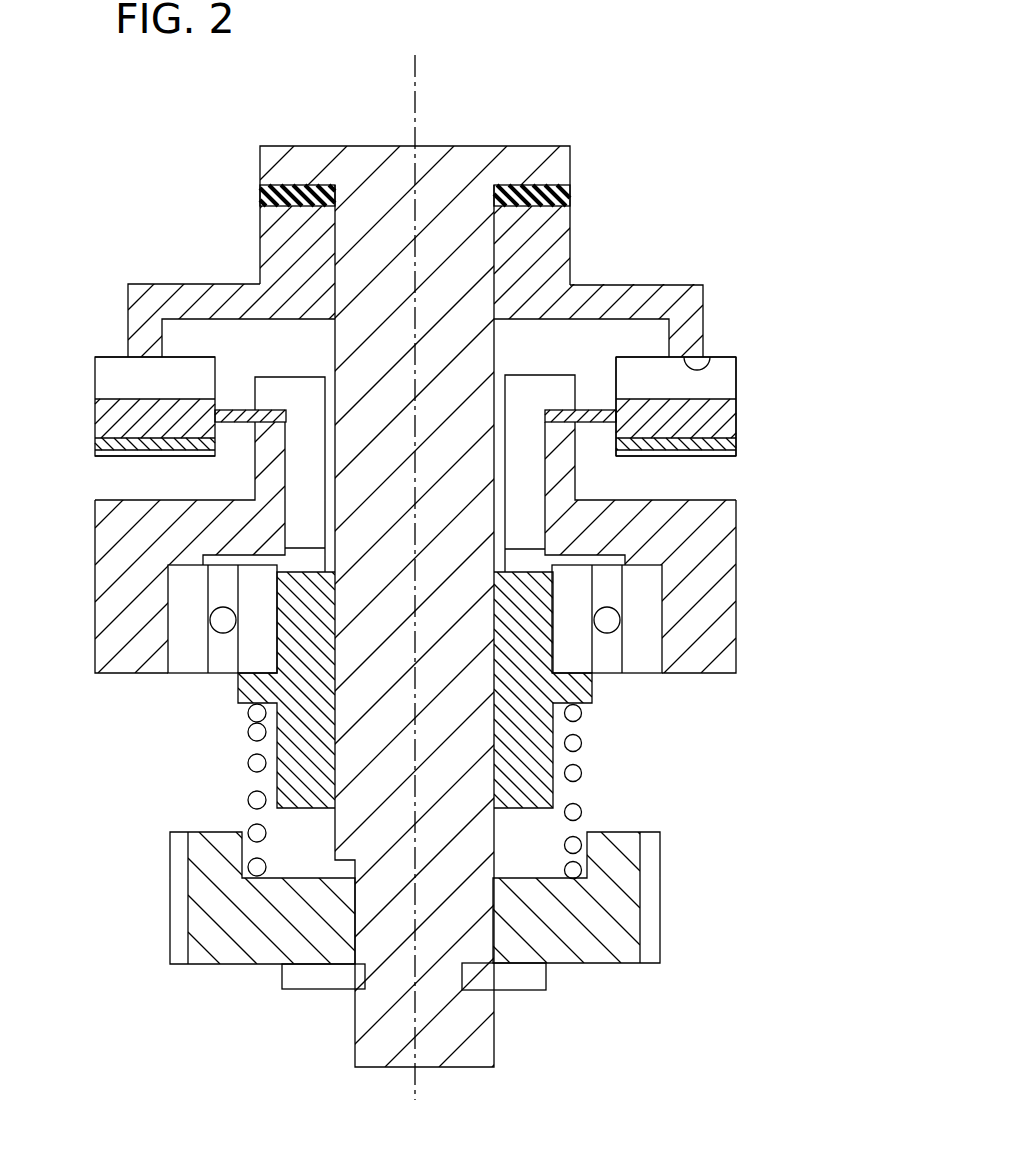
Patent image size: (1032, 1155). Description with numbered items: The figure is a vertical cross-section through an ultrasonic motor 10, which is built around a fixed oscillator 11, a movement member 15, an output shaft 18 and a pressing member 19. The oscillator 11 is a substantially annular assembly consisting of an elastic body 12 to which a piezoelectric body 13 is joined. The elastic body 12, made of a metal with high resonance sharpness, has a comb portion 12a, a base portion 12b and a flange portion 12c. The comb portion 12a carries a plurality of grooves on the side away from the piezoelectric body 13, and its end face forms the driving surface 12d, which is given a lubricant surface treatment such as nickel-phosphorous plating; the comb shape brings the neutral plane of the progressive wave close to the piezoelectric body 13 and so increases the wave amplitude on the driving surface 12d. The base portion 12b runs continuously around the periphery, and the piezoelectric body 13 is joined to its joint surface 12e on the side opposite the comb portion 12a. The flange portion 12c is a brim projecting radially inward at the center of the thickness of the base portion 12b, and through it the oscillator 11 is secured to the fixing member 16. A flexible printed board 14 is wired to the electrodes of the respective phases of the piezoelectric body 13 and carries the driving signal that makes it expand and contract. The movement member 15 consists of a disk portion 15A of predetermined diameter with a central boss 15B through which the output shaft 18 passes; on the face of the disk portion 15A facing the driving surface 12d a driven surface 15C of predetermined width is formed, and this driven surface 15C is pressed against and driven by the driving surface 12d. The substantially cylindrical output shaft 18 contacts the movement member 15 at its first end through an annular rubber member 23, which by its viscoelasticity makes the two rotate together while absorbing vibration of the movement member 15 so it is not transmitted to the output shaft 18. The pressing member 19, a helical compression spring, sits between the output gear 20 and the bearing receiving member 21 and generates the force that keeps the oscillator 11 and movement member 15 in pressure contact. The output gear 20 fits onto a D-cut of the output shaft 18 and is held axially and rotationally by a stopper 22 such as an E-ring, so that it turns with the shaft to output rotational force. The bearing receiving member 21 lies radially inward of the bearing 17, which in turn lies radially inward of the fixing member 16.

The ultrasonic motor 10 is at (705, 149).
The oscillator 11 is at (868, 348).
The elastic body 12 is at (822, 323).
The comb portion 12a is at (720, 388).
The base portion 12b is at (713, 418).
The flange portion 12c is at (590, 418).
The driving surface 12d is at (700, 355).
The joint surface 12e is at (100, 448).
The piezoelectric body 13 is at (730, 443).
The flexible printed board 14 is at (723, 452).
The movement member 15 is at (805, 298).
The disk portion 15A is at (700, 285).
The boss 15B is at (570, 255).
The driven surface 15C is at (698, 362).
The fixing member 16 is at (717, 560).
The bearing 17 is at (641, 657).
The output shaft 18 is at (470, 238).
The pressing member 19 is at (582, 773).
The output gear 20 is at (612, 962).
The bearing receiving member 21 is at (257, 685).
The stopper 22 is at (530, 988).
The rubber member 23 is at (260, 190).